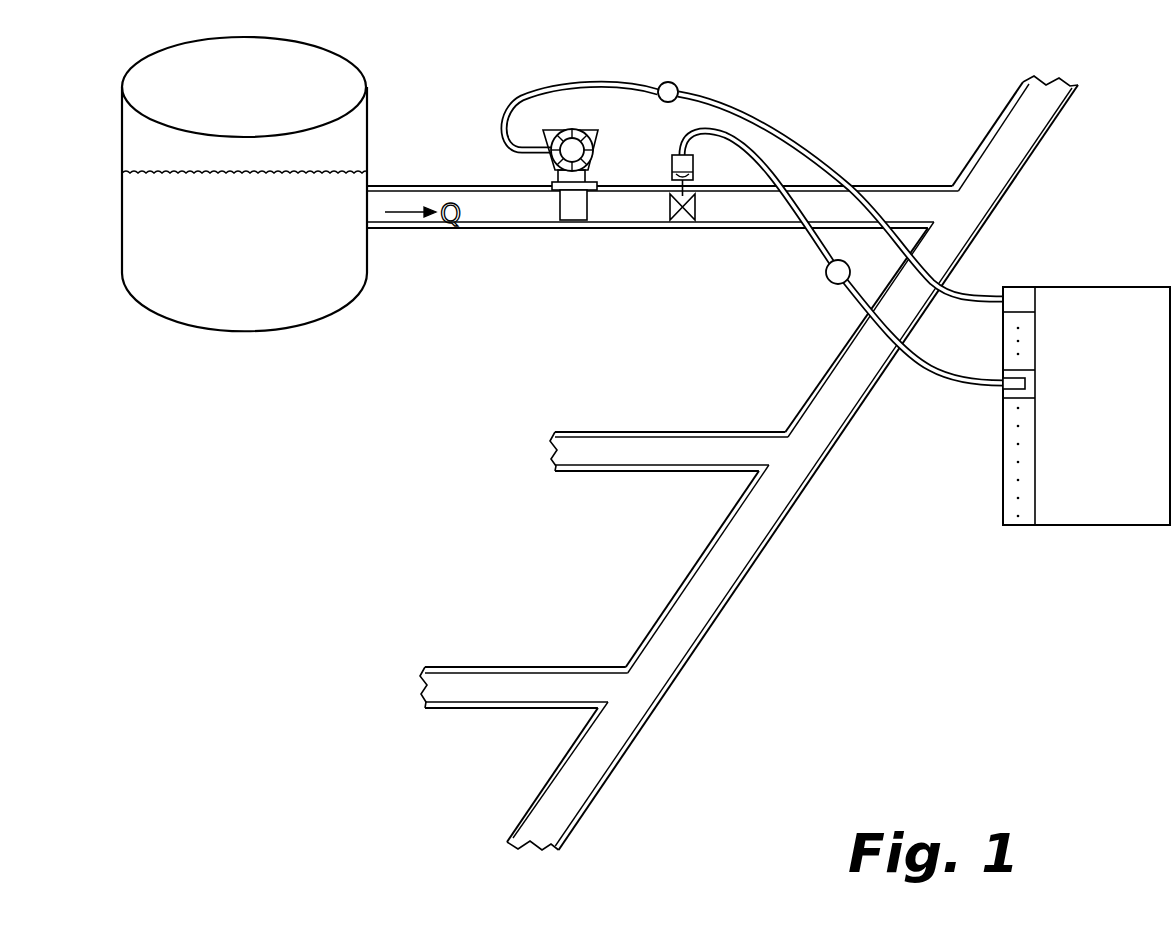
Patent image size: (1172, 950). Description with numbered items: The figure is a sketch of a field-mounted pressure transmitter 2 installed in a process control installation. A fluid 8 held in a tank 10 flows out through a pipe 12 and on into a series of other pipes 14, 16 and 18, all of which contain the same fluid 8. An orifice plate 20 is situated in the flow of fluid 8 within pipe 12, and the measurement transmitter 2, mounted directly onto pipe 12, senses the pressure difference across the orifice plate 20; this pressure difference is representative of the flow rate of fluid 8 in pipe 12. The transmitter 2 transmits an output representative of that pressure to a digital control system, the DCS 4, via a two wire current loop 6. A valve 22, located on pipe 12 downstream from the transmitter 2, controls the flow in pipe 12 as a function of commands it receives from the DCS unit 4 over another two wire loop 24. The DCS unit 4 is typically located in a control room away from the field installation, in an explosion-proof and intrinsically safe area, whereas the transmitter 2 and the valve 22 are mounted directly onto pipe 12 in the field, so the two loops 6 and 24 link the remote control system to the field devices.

The pressure transmitter 2 is at (573, 118).
The digital control system 4 is at (1105, 390).
The two wire current loop 6 is at (673, 83).
The fluid 8 is at (256, 247).
The tank 10 is at (368, 116).
The pipe 12 is at (486, 230).
The pipe 14 is at (873, 393).
The pipe 16 is at (630, 471).
The pipe 18 is at (476, 708).
The orifice plate 20 is at (593, 206).
The valve 22 is at (670, 167).
The two wire loop 24 is at (826, 277).